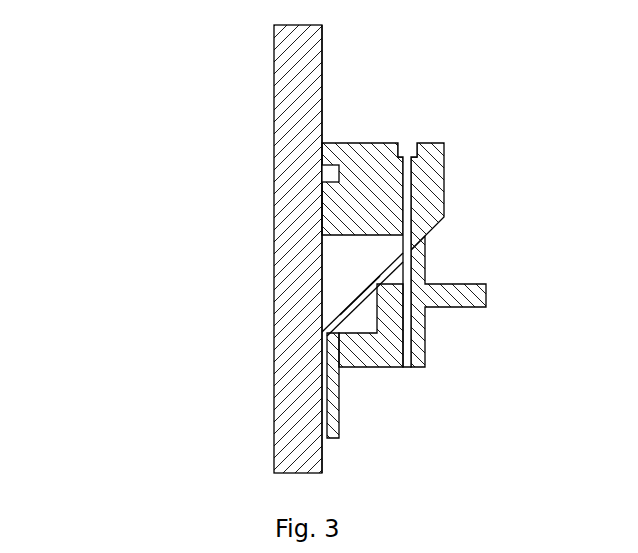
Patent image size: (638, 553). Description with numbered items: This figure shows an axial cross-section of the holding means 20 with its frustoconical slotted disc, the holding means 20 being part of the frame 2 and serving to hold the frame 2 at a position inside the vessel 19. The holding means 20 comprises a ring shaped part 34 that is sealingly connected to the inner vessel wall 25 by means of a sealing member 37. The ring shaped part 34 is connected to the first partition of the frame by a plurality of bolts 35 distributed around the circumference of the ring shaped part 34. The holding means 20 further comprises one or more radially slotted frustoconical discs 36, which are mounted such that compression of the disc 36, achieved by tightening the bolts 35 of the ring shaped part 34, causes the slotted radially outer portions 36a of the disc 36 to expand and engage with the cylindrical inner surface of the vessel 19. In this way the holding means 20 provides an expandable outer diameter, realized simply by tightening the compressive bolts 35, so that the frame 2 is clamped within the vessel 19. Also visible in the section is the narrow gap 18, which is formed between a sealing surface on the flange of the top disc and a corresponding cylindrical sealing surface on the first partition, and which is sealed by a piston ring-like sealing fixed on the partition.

The frame 2 is at (333, 372).
The narrow gap 18 is at (355, 348).
The vessel 19 is at (297, 146).
The holding means 20 is at (500, 158).
The inner vessel wall 25 is at (322, 108).
The ring shaped part 34 is at (348, 210).
The bolts 35 is at (405, 245).
The radially slotted frustoconical disc 36 is at (378, 280).
The slotted radially outer portions 36a is at (355, 301).
The sealing member 37 is at (332, 173).